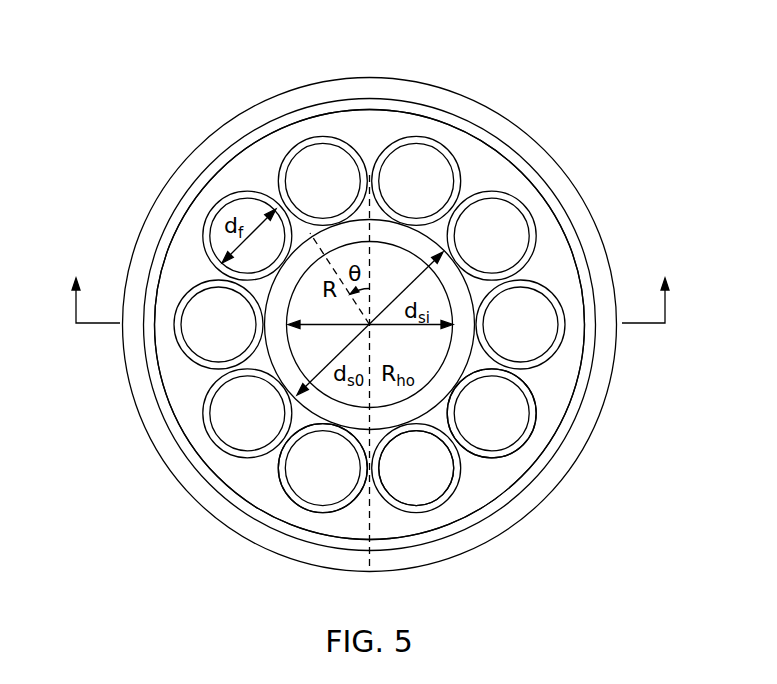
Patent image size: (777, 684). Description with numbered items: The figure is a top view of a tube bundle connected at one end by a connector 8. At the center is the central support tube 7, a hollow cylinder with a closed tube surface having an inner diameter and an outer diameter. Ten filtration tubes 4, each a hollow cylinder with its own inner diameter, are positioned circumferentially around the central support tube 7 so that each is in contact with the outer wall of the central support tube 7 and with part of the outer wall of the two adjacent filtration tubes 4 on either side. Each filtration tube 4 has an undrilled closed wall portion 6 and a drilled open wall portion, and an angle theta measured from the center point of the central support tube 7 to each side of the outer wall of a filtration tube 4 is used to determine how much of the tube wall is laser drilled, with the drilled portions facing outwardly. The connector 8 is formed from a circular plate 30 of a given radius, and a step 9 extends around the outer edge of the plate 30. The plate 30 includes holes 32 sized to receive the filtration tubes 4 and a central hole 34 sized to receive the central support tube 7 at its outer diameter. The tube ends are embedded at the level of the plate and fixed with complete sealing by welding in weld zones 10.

The filtration tube 4 is at (295, 493).
The closed wall portion 6 is at (370, 286).
The central support tube 7 is at (348, 415).
The connector 8 is at (375, 128).
The step 9 is at (533, 495).
The weld zones 10 is at (313, 420).
The plate 30 is at (540, 273).
The holes 32 is at (430, 503).
The hole 34 is at (477, 355).